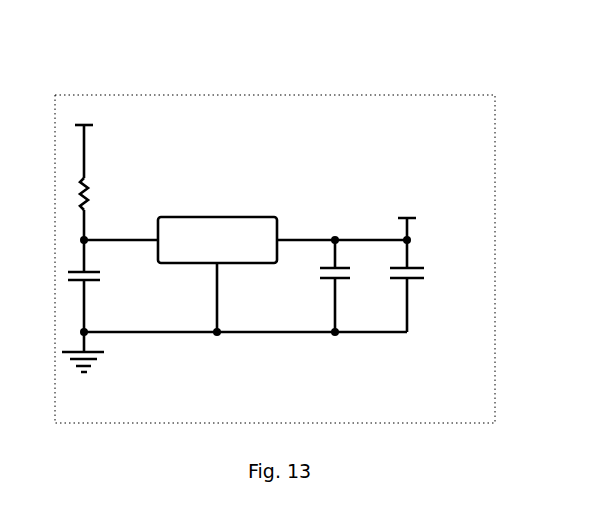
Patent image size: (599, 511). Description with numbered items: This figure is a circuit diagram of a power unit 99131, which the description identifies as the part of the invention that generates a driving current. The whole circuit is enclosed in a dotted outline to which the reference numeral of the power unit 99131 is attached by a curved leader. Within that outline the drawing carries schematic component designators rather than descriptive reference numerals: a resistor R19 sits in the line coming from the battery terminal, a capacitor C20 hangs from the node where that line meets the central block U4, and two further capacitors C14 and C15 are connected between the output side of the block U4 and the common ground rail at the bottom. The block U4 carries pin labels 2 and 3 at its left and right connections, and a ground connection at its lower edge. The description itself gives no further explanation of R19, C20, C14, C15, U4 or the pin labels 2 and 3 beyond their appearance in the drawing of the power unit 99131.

The power unit 99131 is at (248, 95).
The regulator input pin 2 is at (121, 229).
The regulator output pin 3 is at (306, 229).
The resistor R19 is at (102, 191).
The input capacitor C20 is at (101, 277).
The output capacitor C14 is at (315, 286).
The output capacitor C15 is at (426, 298).
The voltage regulator U4 is at (217, 227).